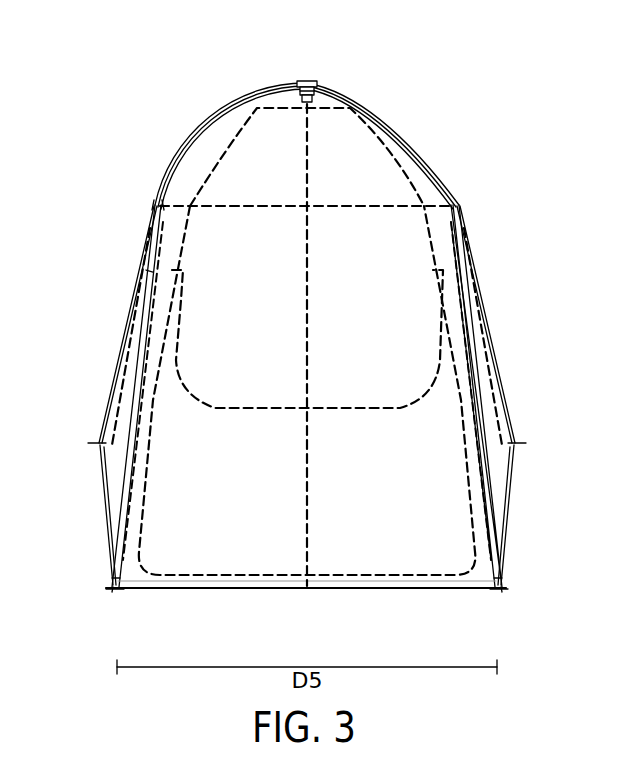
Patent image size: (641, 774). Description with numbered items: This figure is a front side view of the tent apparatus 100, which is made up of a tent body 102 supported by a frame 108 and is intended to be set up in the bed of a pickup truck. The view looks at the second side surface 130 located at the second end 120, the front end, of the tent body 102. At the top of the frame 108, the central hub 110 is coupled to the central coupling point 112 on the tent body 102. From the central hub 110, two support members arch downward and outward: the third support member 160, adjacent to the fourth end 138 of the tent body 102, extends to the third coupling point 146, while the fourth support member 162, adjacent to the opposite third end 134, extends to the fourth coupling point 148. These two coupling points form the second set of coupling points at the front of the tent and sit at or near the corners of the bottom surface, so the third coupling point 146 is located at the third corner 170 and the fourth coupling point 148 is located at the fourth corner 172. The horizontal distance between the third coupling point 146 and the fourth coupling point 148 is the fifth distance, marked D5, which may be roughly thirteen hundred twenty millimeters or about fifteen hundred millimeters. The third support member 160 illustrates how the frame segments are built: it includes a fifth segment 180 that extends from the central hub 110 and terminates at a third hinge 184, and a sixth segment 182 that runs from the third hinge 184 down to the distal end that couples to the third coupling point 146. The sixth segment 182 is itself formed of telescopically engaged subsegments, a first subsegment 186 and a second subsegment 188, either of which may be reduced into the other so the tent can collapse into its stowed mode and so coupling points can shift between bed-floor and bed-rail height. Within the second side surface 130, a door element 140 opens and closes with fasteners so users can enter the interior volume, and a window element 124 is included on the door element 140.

The tent apparatus 100 is at (433, 50).
The tent body 102 is at (440, 180).
The frame 108 is at (206, 129).
The central hub 110 is at (307, 82).
The central coupling point 112 is at (317, 88).
The second end 120 is at (227, 590).
The window element 124 is at (242, 410).
The second side surface 130 is at (408, 582).
The third end 134 is at (507, 488).
The fourth end 138 is at (103, 458).
The door element 140 is at (357, 577).
The third coupling point 146 is at (110, 583).
The fourth coupling point 148 is at (503, 588).
The third support member 160 is at (252, 96).
The fourth support member 162 is at (398, 130).
The third corner 170 is at (120, 590).
The fourth corner 172 is at (493, 588).
The fifth segment 180 is at (178, 168).
The sixth segment 182 is at (140, 292).
The third hinge 184 is at (154, 203).
The first subsegment 186 is at (130, 381).
The second subsegment 188 is at (115, 537).